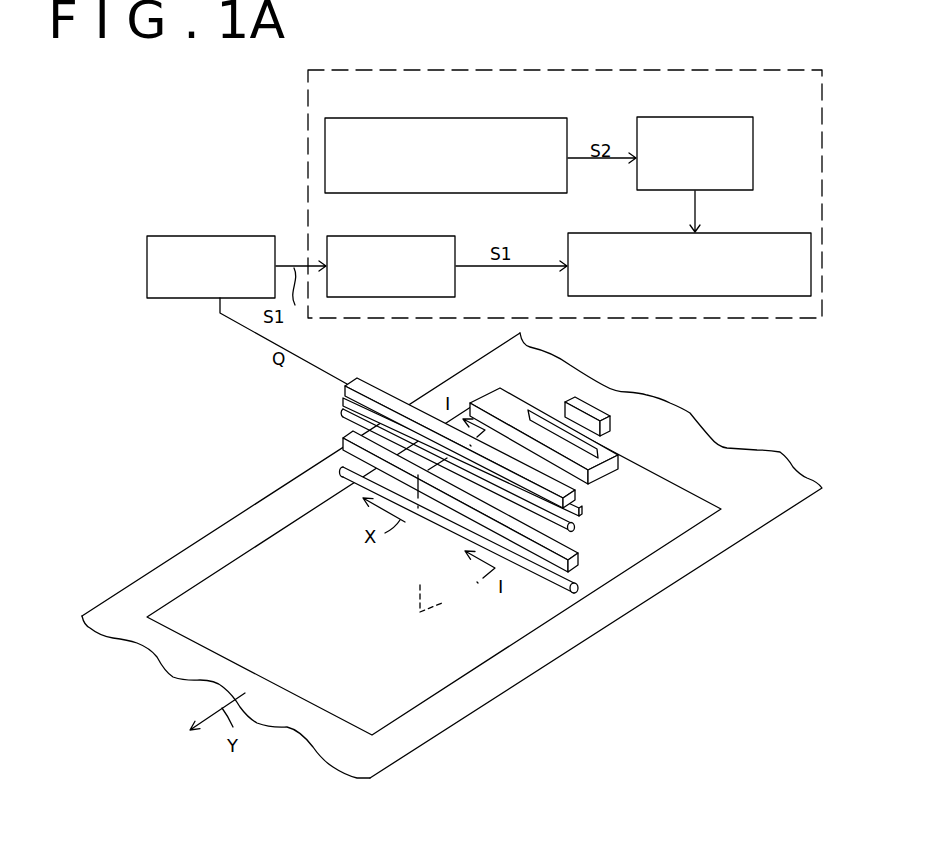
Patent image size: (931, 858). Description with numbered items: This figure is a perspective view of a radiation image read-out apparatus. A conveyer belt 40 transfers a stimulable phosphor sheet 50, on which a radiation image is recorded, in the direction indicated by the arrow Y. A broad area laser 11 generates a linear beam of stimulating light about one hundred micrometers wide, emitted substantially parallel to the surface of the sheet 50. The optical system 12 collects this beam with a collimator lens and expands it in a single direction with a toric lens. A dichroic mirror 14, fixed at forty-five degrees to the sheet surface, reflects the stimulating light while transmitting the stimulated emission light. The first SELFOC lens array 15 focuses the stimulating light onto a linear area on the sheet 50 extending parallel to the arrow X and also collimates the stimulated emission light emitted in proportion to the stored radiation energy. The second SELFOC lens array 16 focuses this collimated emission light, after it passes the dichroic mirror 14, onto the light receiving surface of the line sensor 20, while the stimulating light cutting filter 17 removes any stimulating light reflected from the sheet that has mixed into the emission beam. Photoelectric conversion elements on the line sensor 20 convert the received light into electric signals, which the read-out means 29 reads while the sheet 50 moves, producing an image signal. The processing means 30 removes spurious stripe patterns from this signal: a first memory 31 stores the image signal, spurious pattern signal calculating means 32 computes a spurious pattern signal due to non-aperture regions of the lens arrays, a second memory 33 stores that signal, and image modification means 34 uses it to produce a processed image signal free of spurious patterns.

The broad area laser 11 is at (570, 400).
The optical system 12 is at (625, 470).
The dichroic mirror 14 is at (347, 438).
The first SELFOC lens array 15 is at (338, 470).
The second SELFOC lens array 16 is at (575, 530).
The stimulating light cutting filter 17 is at (583, 509).
The line sensor 20 is at (382, 395).
The read-out means 29 is at (218, 236).
The processing means 30 is at (822, 180).
The first memory 31 is at (433, 234).
The spurious pattern signal calculating means 32 is at (443, 118).
The second memory 33 is at (677, 116).
The image modification means 34 is at (727, 232).
The conveyer belt 40 is at (738, 458).
The stimulable phosphor sheet 50 is at (443, 677).